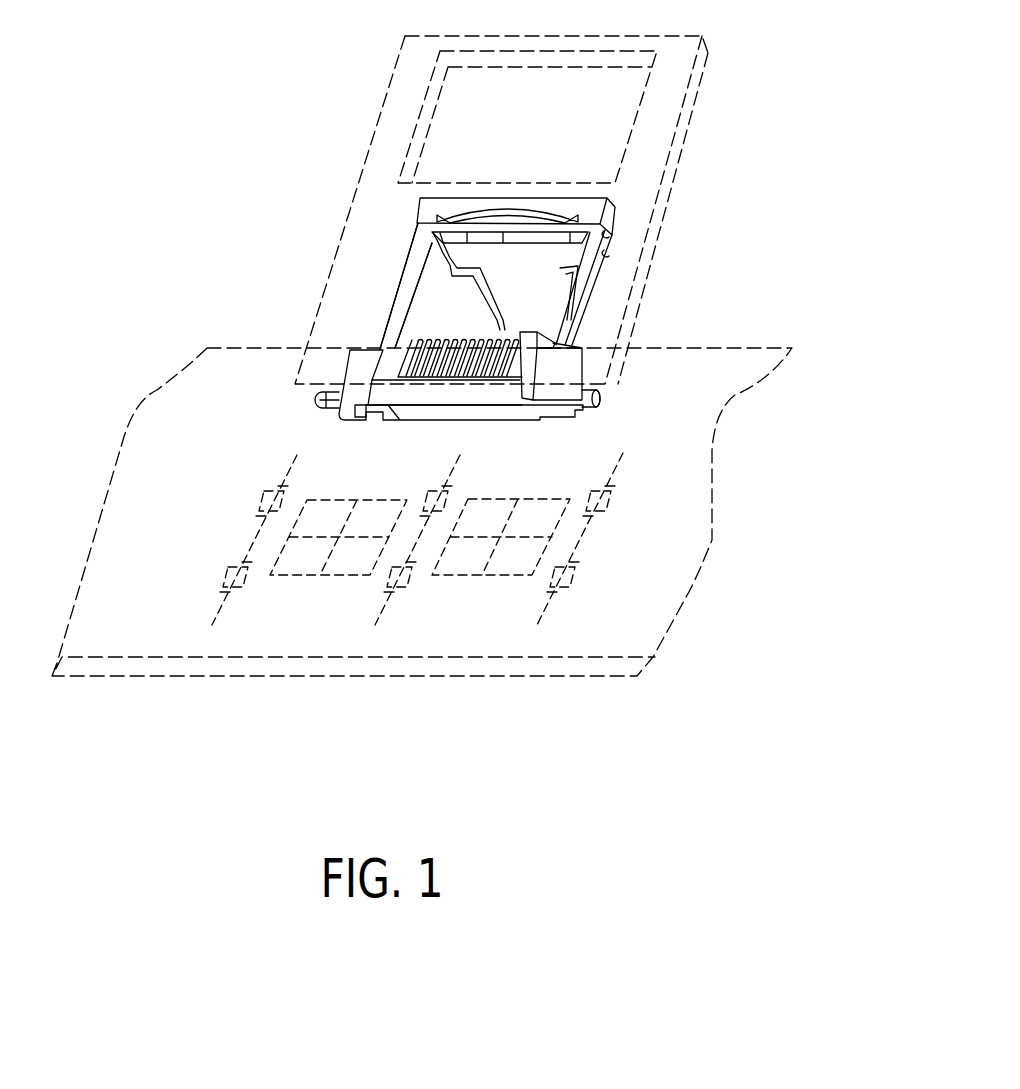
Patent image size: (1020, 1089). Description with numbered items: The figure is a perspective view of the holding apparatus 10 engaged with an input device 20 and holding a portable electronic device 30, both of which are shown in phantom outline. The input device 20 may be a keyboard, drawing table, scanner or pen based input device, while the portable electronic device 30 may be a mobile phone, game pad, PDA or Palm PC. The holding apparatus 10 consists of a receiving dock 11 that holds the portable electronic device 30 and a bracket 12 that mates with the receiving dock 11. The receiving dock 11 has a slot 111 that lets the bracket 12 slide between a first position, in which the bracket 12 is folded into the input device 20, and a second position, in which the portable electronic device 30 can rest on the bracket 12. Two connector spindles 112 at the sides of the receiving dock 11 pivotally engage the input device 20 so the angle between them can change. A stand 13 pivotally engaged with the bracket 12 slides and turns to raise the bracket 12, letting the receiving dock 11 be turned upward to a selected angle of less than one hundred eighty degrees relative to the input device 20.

The holding apparatus 10 is at (429, 318).
The receiving dock 11 is at (429, 362).
The slot 111 is at (385, 410).
The connector spindles 112 is at (593, 387).
The bracket 12 is at (408, 287).
The stand 13 is at (433, 249).
The input device 20 is at (647, 552).
The portable electronic device 30 is at (658, 123).